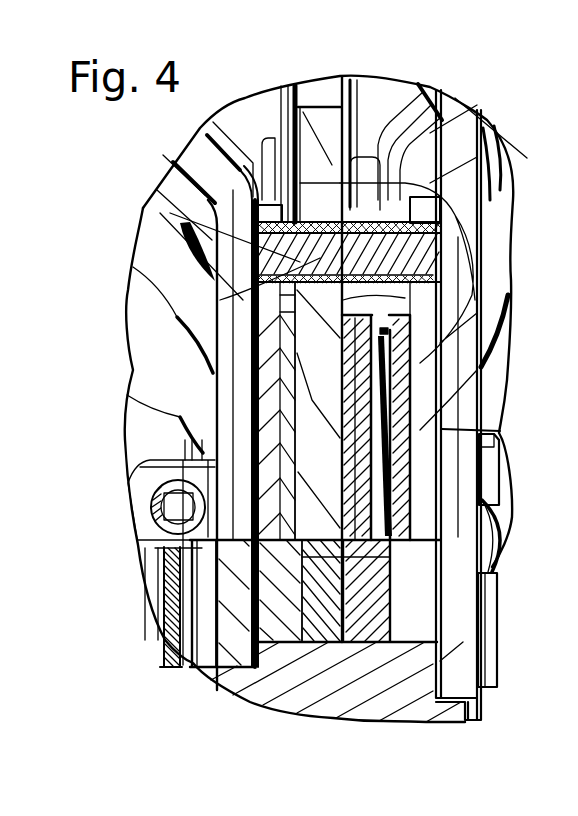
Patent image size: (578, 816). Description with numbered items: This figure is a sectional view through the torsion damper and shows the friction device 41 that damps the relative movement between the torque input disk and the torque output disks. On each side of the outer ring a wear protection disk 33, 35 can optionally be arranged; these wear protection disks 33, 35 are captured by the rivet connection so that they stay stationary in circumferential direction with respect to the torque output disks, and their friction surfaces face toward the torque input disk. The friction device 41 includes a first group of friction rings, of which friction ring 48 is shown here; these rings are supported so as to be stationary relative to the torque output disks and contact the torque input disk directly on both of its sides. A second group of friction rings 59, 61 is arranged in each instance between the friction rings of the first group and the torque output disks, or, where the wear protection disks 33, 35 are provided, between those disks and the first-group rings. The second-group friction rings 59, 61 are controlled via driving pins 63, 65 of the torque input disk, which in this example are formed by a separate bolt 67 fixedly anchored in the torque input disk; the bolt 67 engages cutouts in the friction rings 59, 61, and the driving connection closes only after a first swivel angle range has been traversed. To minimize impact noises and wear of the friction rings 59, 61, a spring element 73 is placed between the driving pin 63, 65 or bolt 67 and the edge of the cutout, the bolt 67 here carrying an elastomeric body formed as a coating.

The wear protection disk 33 is at (253, 422).
The wear protection disk 35 is at (390, 540).
The friction device 41 is at (460, 242).
The friction ring 48 is at (500, 431).
The friction ring 59 is at (160, 590).
The friction ring 61 is at (425, 494).
The driving pin 63 is at (170, 213).
The driving pin 65 is at (484, 186).
The bolt 67 is at (258, 333).
The spring element 73 is at (420, 300).